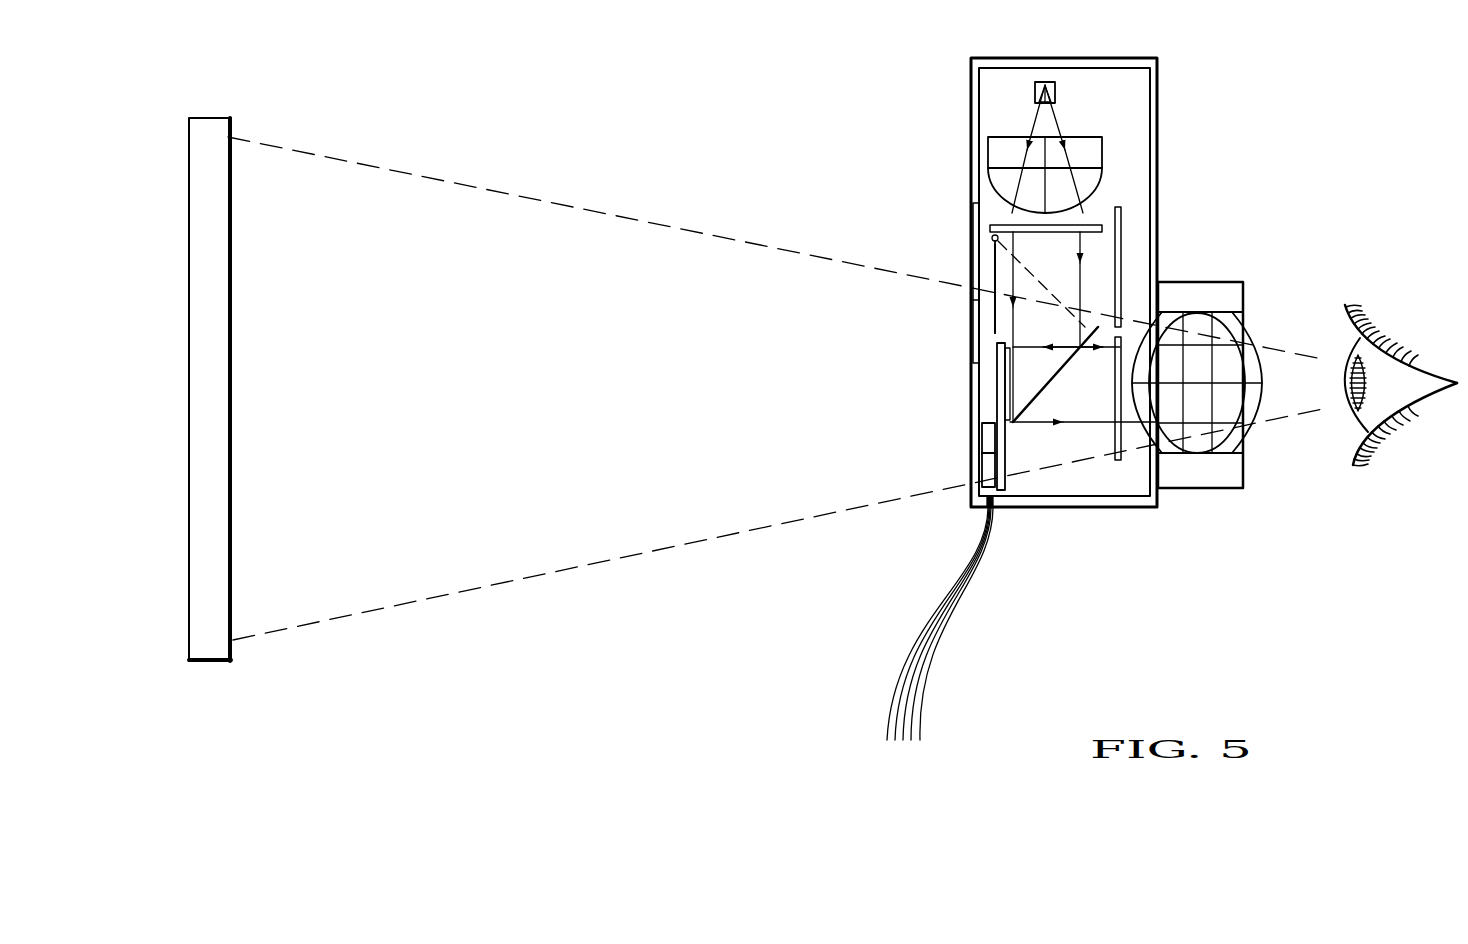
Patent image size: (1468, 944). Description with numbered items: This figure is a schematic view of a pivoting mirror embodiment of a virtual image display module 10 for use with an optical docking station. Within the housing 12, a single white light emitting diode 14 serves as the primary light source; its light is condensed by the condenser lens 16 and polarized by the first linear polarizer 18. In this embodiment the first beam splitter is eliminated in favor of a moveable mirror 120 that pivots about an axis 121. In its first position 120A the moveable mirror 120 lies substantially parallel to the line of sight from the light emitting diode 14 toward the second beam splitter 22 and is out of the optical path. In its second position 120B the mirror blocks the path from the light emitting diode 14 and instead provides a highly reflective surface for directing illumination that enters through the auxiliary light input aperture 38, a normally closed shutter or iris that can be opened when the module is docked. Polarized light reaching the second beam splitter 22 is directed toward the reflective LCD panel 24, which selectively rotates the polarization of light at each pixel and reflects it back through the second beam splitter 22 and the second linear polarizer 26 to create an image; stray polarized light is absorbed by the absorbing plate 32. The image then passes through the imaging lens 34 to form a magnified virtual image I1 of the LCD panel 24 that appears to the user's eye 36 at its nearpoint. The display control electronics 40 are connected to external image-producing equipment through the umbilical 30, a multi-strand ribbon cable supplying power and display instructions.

The magnified virtual image I1 is at (176, 120).
The virtual image display module 10 is at (915, 100).
The housing 12 is at (971, 145).
The light emitting diode 14 is at (1048, 81).
The condenser lens 16 is at (1103, 147).
The first linear polarizer 18 is at (1098, 224).
The moveable mirror 120 is at (990, 275).
The first position 120A is at (995, 312).
The second position 120B is at (1122, 250).
The axis 121 is at (994, 234).
The auxiliary light input port or aperture 38 is at (975, 247).
The reflective LCD panel 24 is at (1000, 393).
The display control electronics 40 is at (985, 443).
The second beam splitter 22 is at (1046, 398).
The second linear polarizer 26 is at (1116, 402).
The absorbing plate 32 is at (1123, 273).
The imaging lens 34 is at (1243, 490).
The user's eye 36 is at (1375, 452).
The umbilical 30 is at (918, 733).